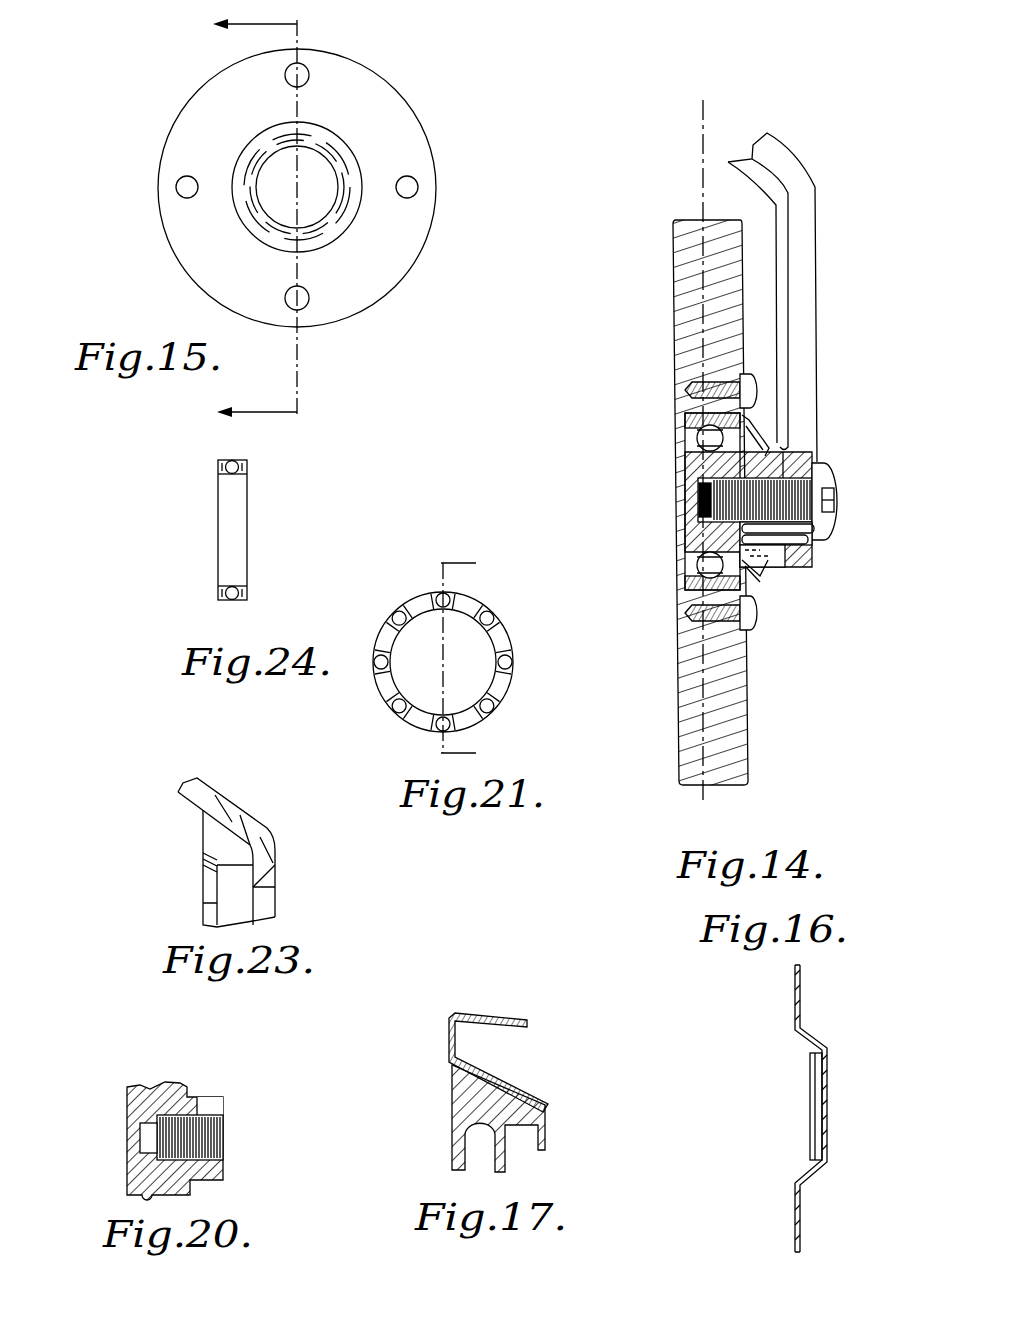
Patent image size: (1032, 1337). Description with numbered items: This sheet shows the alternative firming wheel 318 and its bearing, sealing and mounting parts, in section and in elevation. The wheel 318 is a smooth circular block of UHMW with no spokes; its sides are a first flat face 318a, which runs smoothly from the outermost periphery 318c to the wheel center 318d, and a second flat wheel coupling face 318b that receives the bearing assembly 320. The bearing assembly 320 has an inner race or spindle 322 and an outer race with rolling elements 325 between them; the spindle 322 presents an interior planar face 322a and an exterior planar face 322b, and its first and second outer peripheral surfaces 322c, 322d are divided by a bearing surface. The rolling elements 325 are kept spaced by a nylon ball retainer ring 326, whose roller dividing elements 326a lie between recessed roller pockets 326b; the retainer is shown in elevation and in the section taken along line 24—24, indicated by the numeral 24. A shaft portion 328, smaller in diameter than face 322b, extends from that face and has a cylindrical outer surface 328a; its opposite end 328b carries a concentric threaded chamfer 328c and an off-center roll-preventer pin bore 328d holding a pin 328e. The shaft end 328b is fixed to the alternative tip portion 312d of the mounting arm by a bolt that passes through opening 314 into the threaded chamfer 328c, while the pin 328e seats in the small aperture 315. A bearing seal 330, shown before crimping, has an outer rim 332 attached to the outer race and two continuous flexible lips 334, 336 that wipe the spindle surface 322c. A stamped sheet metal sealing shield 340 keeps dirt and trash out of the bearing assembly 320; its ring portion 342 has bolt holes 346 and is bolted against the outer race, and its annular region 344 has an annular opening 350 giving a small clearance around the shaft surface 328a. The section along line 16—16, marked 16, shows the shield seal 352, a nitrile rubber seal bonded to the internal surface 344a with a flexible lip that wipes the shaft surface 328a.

In FIG. 15, the section line 16— 16 is at (278, 220).
In FIG. 21, the section line 24— 24 is at (477, 659).
In FIG. 14, the alternative tip portion 312d is at (800, 374).
In FIG. 14, the opening 314 is at (813, 462).
In FIG. 14, the small aperture 315 is at (810, 566).
In FIG. 14, the firming wheel 318 is at (655, 280).
In FIG. 14, the first flat face 318a is at (675, 348).
In FIG. 14, the second flat wheel coupling face 318b is at (744, 292).
In FIG. 14, the outermost periphery 318c is at (676, 219).
In FIG. 14, the wheel center 318d is at (684, 540).
In FIG. 14, the bearing assembly 320 is at (684, 460).
In FIG. 20, the inner race or spindle 322 is at (190, 1083).
In FIG. 14, the inner race or spindle 322 is at (684, 455).
In FIG. 20, the spindle interior planar face 322a is at (127, 1115).
In FIG. 14, the spindle interior planar face 322a is at (690, 556).
In FIG. 20, the spindle exterior planar face 322b is at (198, 1095).
In FIG. 14, the spindle exterior planar face 322b is at (795, 455).
In FIG. 20, the first outer peripheral surface 322c is at (167, 1083).
In FIG. 20, the second outer peripheral surface 322d is at (127, 1090).
In FIG. 24, the rolling elements 325 is at (226, 462).
In FIG. 21, the rolling elements 325 is at (398, 613).
In FIG. 14, the rolling elements 325 is at (690, 577).
In FIG. 24, the nylon ball retainer ring 326 is at (250, 517).
In FIG. 21, the nylon ball retainer ring 326 is at (407, 540).
In FIG. 21, the roller dividing elements 326a is at (418, 600).
In FIG. 24, the recessed roller pockets 326b is at (243, 602).
In FIG. 21, the recessed roller pockets 326b is at (513, 650).
In FIG. 20, the shaft portion 328 is at (210, 1182).
In FIG. 14, the shaft portion 328 is at (832, 480).
In FIG. 20, the cylindrical outer surface 328a is at (220, 1089).
In FIG. 20, the shaft opposite end 328b is at (223, 1168).
In FIG. 20, the concentric threaded chamfer 328c is at (170, 1140).
In FIG. 14, the roll-preventer pin bore 328d is at (770, 548).
In FIG. 14, the pin 328e is at (833, 530).
In FIG. 17, the bearing seal 330 is at (489, 1000).
In FIG. 14, the bearing seal 330 is at (690, 480).
In FIG. 17, the outer rim 332 is at (505, 1080).
In FIG. 17, the flexible lip 334 is at (457, 1173).
In FIG. 17, the flexible lip 336 is at (502, 1177).
In FIG. 15, the sealing shield 340 is at (422, 77).
In FIG. 16, the sealing shield 340 is at (822, 1030).
In FIG. 15, the ring portion 342 is at (356, 89).
In FIG. 14, the ring portion 342 is at (750, 366).
In FIG. 16, the ring portion 342 is at (803, 1010).
In FIG. 15, the annular region 344 is at (342, 160).
In FIG. 14, the annular region 344 is at (765, 578).
In FIG. 16, the annular region 344 is at (812, 1175).
In FIG. 16, the internal surface 344a is at (800, 1038).
In FIG. 15, the bolt holes 346 is at (417, 188).
In FIG. 15, the annular opening 350 is at (270, 186).
In FIG. 16, the annular opening 350 is at (828, 1085).
In FIG. 23, the shield seal 352 is at (258, 822).
In FIG. 14, the shield seal 352 is at (760, 425).
In FIG. 16, the shield seal 352 is at (812, 1160).